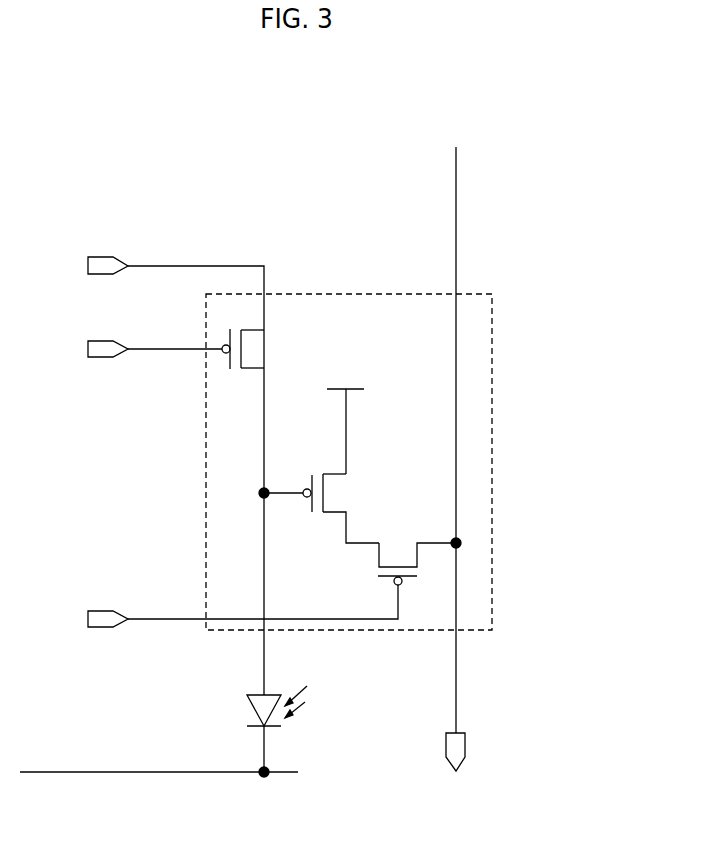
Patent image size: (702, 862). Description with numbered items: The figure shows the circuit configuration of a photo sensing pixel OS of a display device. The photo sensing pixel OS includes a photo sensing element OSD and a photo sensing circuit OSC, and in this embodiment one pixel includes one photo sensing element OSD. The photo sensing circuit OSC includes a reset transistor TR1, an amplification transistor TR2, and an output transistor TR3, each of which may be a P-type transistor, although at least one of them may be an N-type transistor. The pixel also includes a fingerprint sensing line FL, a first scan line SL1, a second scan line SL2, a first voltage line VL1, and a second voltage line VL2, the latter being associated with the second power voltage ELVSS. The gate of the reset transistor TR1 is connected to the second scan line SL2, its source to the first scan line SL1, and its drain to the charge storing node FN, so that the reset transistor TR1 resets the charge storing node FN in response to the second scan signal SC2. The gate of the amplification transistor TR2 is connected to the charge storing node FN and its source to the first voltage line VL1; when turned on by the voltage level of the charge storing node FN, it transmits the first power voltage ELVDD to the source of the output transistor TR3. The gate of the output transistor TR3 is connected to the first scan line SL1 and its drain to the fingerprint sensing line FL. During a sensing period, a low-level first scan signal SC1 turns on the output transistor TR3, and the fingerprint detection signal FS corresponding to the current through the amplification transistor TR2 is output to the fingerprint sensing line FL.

The photo sensing pixel OS is at (333, 145).
The photo sensing circuit OSC is at (492, 462).
The first scan signal SC1 is at (88, 443).
The second scan signal SC2 is at (88, 349).
The first scan line SL1 is at (195, 265).
The second scan line SL2 is at (155, 345).
The reset transistor TR1 is at (260, 349).
The amplification transistor TR2 is at (341, 508).
The output transistor TR3 is at (419, 549).
The first power voltage ELVDD is at (335, 373).
The second power voltage ELVSS is at (260, 788).
The first voltage line VL1 is at (355, 390).
The second voltage line VL2 is at (60, 770).
The charge storing node FN is at (258, 493).
The fingerprint sensing line FL is at (455, 660).
The fingerprint detection signal FS is at (456, 769).
The photo sensing element OSD is at (263, 729).